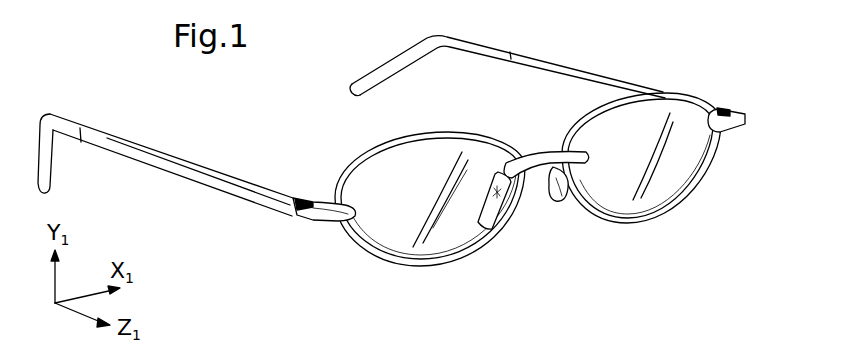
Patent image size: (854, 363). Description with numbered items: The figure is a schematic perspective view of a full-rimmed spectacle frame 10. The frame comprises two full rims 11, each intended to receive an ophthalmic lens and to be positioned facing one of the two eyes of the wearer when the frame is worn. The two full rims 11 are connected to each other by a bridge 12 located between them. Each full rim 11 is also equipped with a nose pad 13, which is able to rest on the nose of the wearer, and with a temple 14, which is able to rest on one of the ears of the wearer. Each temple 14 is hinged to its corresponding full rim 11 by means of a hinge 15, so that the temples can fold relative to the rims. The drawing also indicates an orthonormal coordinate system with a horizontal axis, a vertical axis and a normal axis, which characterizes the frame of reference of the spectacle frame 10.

The full-rimmed spectacle frame 10 is at (281, 262).
The full rim 11 is at (405, 268).
The bridge 12 is at (557, 151).
The nose pad 13 is at (482, 224).
The temple 14 is at (230, 185).
The hinge 15 is at (297, 197).